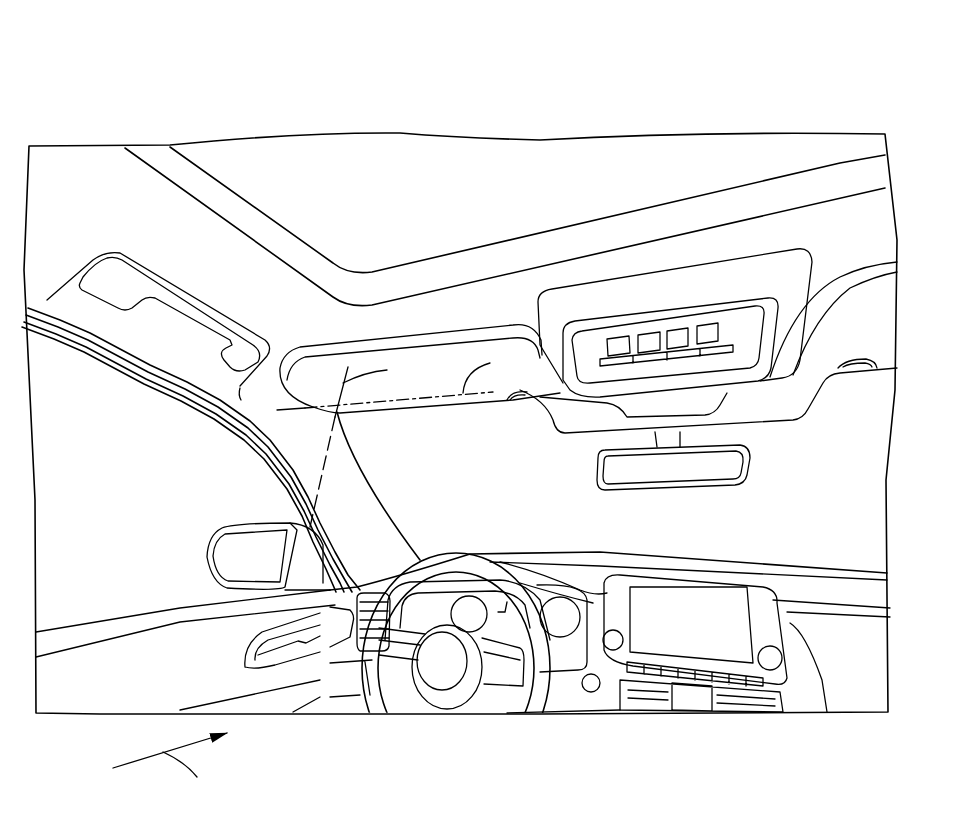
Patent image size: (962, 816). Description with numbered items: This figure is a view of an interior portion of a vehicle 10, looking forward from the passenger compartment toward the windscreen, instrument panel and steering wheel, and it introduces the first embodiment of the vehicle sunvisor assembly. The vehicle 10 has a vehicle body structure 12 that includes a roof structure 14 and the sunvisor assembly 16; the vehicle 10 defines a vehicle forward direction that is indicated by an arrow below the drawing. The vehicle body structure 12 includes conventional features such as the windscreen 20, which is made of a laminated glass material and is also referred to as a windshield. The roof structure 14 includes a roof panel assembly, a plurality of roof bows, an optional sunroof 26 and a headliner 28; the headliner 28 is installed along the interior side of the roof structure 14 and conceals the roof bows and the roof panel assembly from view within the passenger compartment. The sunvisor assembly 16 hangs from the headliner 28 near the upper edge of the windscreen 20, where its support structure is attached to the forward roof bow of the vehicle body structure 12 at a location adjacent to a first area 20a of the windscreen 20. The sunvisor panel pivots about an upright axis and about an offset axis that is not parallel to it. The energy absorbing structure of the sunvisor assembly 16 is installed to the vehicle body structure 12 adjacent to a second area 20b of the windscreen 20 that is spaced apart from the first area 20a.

The vehicle 10 is at (209, 67).
The vehicle body structure 12 is at (78, 146).
The roof structure 14 is at (522, 238).
The sunvisor assembly 16 is at (423, 411).
The windscreen 20 is at (820, 483).
The first area of the windscreen 20a is at (337, 417).
The second area of the windscreen 20b is at (540, 413).
The sunroof 26 is at (377, 180).
The headliner 28 is at (857, 232).